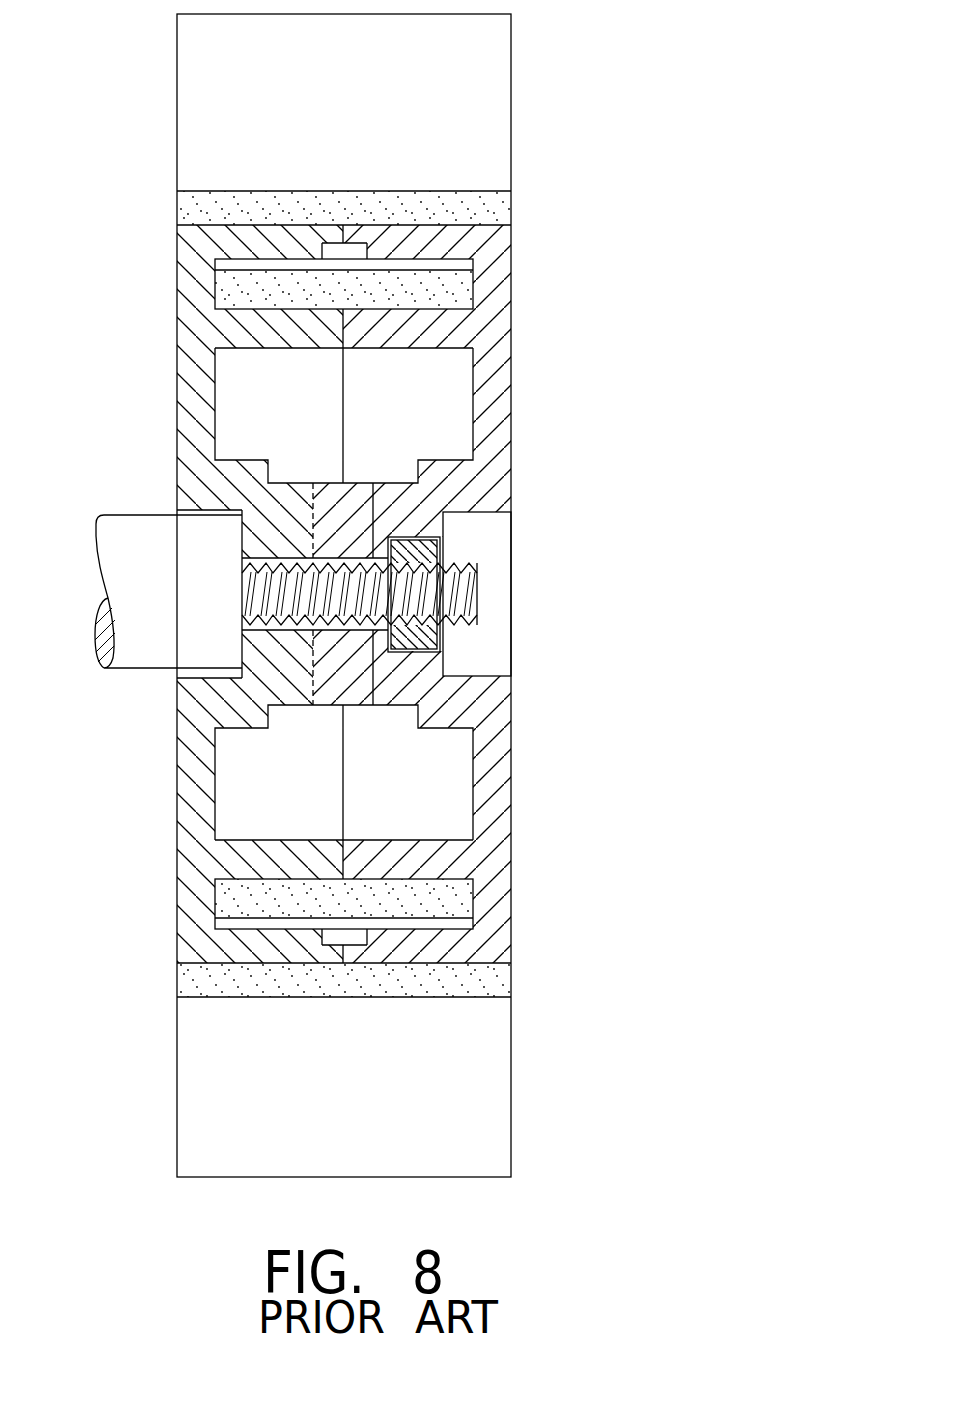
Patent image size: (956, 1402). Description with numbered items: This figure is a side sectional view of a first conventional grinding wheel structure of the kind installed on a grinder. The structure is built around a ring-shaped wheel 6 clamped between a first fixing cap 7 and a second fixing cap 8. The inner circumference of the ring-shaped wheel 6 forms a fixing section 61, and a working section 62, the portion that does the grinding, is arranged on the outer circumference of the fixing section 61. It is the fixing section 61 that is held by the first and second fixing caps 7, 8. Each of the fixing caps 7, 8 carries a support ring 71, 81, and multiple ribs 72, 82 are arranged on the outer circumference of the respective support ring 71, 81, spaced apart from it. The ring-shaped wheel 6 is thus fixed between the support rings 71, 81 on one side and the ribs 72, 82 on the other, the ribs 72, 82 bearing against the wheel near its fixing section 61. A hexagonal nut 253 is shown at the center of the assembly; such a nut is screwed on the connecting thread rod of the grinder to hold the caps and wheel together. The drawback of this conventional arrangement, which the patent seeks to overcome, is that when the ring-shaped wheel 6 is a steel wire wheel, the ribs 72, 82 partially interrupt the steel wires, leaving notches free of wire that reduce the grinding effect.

The ring-shaped wheel 6 is at (396, 595).
The working section 62 is at (438, 128).
The fixing section 61 is at (400, 287).
The first fixing cap 7 is at (490, 418).
The support ring 71 is at (385, 322).
The ribs 72 is at (482, 243).
The second fixing cap 8 is at (190, 417).
The support ring 81 is at (297, 327).
The ribs 82 is at (300, 243).
The hexagonal nut 253 is at (412, 550).